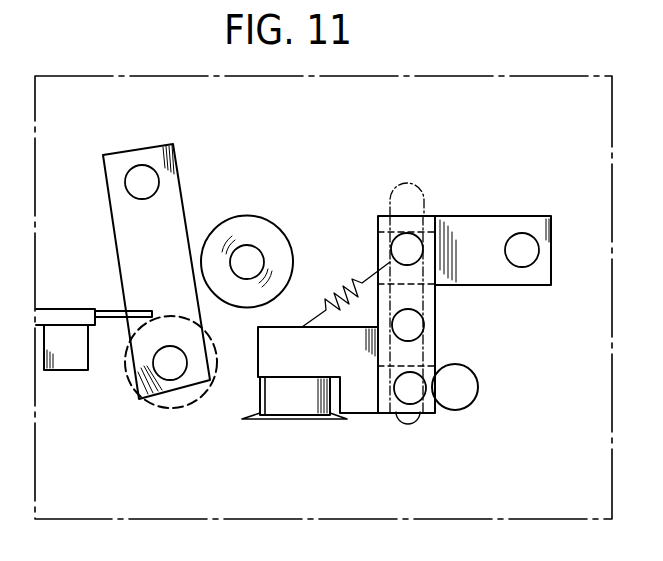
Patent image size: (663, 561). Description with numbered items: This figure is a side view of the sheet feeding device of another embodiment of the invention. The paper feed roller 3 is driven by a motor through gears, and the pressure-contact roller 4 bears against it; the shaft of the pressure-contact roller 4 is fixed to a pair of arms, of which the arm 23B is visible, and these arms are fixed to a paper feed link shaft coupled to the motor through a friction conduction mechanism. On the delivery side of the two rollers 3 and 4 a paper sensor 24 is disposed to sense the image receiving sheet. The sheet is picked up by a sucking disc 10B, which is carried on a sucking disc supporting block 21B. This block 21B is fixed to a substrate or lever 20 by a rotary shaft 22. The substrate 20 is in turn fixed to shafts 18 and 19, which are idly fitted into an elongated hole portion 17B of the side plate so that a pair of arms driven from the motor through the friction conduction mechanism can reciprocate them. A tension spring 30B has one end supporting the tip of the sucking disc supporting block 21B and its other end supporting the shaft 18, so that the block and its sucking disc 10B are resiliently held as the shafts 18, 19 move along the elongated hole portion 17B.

The paper feed roller 3 is at (232, 218).
The pressure-contact roller 4 is at (170, 407).
The sucking disc 10B is at (258, 419).
The elongated hole portion 17B is at (423, 198).
The shaft 18 is at (423, 247).
The shaft 19 is at (424, 322).
The substrate 20 is at (437, 347).
The sucking disc supporting block 21B is at (375, 403).
The rotary shaft 22 is at (417, 403).
The arm 23B is at (108, 152).
The paper sensor 24 is at (57, 372).
The tension spring 30B is at (334, 294).